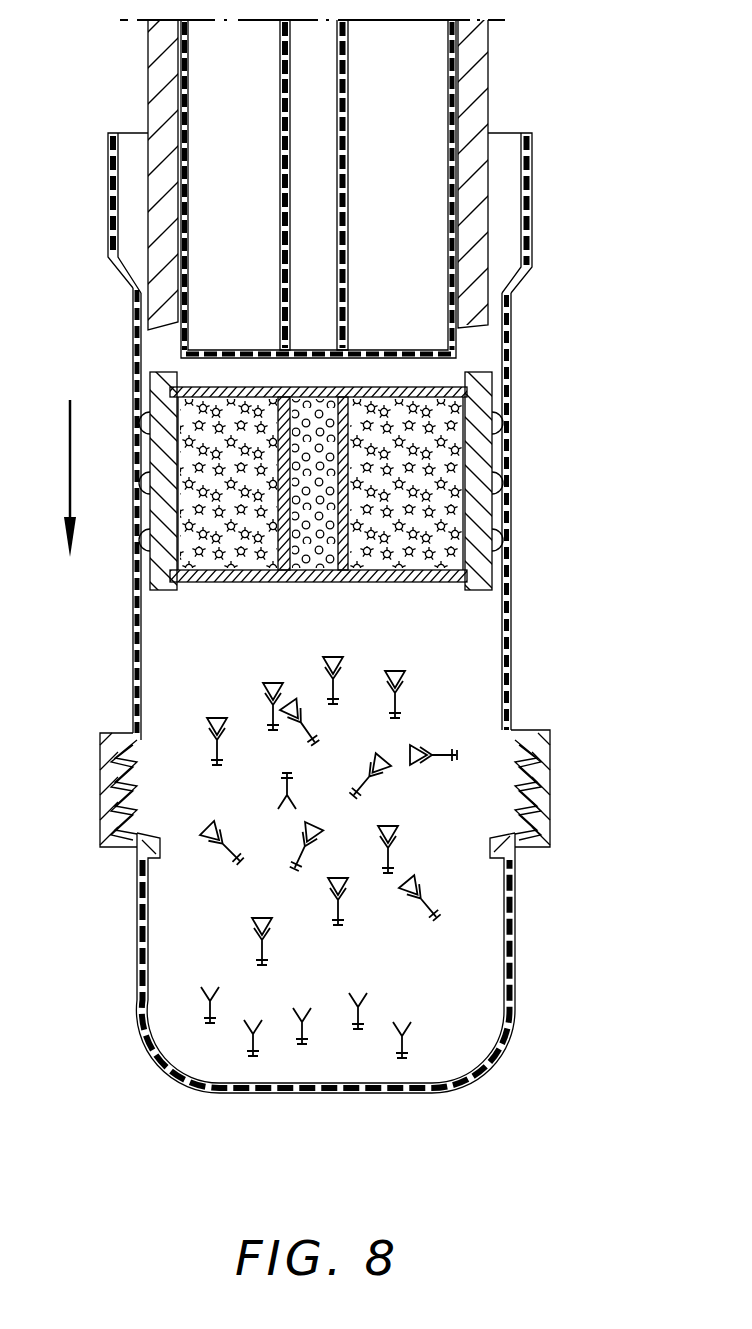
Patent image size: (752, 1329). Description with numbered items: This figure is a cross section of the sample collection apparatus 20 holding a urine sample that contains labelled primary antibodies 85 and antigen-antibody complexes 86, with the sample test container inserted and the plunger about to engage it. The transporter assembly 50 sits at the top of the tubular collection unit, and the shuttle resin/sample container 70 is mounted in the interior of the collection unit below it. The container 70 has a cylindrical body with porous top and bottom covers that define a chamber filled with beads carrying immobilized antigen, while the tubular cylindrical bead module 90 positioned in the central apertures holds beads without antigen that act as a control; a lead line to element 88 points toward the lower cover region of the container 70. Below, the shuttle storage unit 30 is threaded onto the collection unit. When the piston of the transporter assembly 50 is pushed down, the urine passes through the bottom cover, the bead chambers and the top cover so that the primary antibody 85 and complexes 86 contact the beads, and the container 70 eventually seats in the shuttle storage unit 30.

The transporter assembly 50 is at (492, 188).
The sample collection apparatus 20 is at (518, 676).
The shuttle storage unit 30 is at (522, 982).
The shuttle resin/sample container 70 is at (508, 512).
The filter plates 88 is at (328, 572).
The tubular cylindrical bead module 90 is at (440, 417).
The antigen-antibody complexes 86 is at (165, 690).
The primary antibody 85 is at (166, 1009).